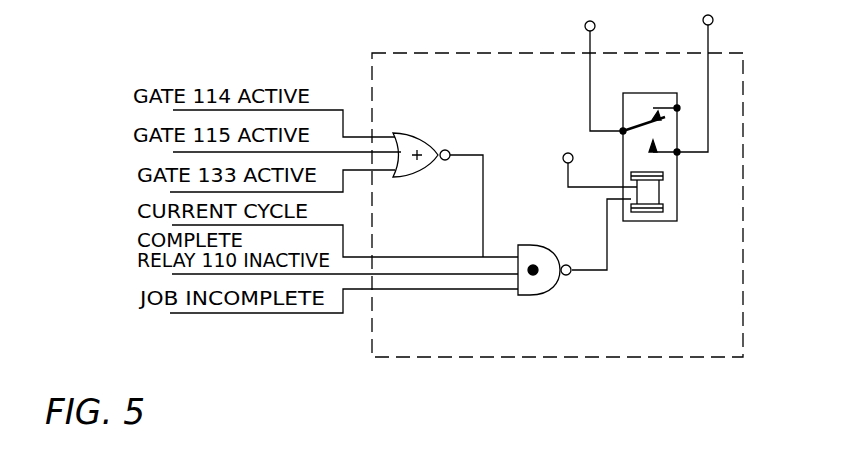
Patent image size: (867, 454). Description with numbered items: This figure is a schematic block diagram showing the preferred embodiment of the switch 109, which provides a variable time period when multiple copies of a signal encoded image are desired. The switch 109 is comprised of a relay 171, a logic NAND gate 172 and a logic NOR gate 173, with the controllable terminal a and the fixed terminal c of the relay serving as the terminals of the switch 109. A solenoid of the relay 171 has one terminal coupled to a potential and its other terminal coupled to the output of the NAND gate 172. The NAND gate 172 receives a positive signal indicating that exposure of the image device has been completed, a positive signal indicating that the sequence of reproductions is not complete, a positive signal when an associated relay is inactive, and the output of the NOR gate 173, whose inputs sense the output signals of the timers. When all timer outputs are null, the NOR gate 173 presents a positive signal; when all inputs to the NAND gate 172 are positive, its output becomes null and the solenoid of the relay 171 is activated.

The switch 109 is at (770, 158).
The relay 171 is at (660, 221).
The logic NAND gate 172 is at (538, 295).
The logic NOR gate 173 is at (424, 132).